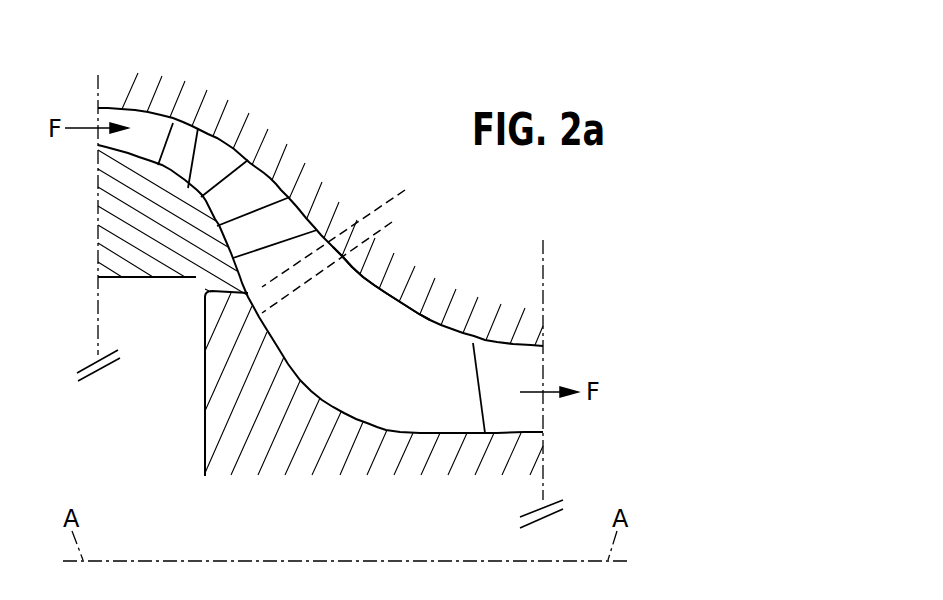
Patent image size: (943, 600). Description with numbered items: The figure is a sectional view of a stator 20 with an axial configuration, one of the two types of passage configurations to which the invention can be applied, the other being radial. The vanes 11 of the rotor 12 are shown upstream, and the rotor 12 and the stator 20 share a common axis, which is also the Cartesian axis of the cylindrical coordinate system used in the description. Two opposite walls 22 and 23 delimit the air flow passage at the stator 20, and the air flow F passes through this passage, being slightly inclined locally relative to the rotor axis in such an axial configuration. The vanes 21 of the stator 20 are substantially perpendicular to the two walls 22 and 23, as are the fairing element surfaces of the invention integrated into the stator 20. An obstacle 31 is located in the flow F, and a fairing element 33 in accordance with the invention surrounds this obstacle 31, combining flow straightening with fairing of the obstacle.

The vanes of rotor 11 is at (179, 148).
The rotor 12 is at (136, 222).
The stator 20 is at (357, 204).
The vanes of stator 21 is at (250, 183).
The wall 22 is at (181, 199).
The wall 23 is at (212, 151).
The obstacle 31 is at (348, 241).
The fairing element 33 is at (373, 280).